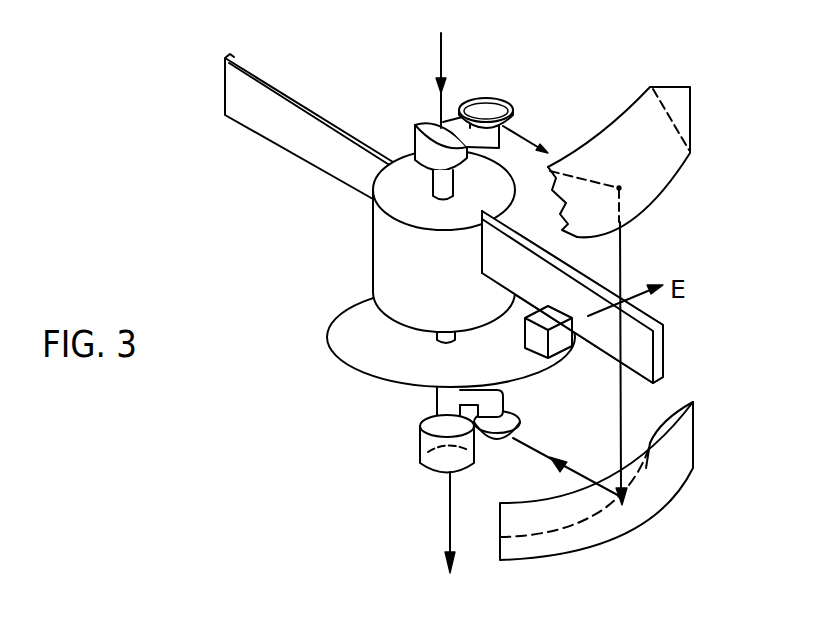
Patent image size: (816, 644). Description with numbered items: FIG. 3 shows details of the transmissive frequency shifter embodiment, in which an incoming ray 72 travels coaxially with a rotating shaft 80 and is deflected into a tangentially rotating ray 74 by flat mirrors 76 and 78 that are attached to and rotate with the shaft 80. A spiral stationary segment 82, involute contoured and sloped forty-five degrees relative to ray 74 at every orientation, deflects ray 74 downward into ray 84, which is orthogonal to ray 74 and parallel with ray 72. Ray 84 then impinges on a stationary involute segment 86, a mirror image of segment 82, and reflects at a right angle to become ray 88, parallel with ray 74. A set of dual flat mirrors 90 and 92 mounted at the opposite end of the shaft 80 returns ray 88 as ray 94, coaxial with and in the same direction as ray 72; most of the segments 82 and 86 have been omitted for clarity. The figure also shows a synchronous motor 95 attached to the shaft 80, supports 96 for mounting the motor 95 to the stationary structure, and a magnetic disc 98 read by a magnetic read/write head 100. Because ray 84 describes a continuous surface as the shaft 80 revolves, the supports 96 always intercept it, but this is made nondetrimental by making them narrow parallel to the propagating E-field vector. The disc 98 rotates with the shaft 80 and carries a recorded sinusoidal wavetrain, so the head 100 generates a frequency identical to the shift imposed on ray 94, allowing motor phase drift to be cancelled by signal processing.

The incoming ray 72 is at (441, 58).
The tangentially rotating ray 74 is at (551, 163).
The flat mirror 76 is at (421, 126).
The flat mirror 78 is at (500, 98).
The rotating shaft 80 is at (453, 185).
The spiral stationary segment 82 is at (670, 88).
The ray 84 is at (624, 418).
The stationary involute segment 86 is at (690, 446).
The ray 88 is at (566, 466).
The flat mirror 90 is at (520, 410).
The flat mirror 92 is at (430, 465).
The ray 94 is at (447, 527).
The synchronous motor 95 is at (372, 233).
The support 96 is at (243, 126).
The magnetic disc 98 is at (358, 360).
The magnetic read/write head 100 is at (527, 337).